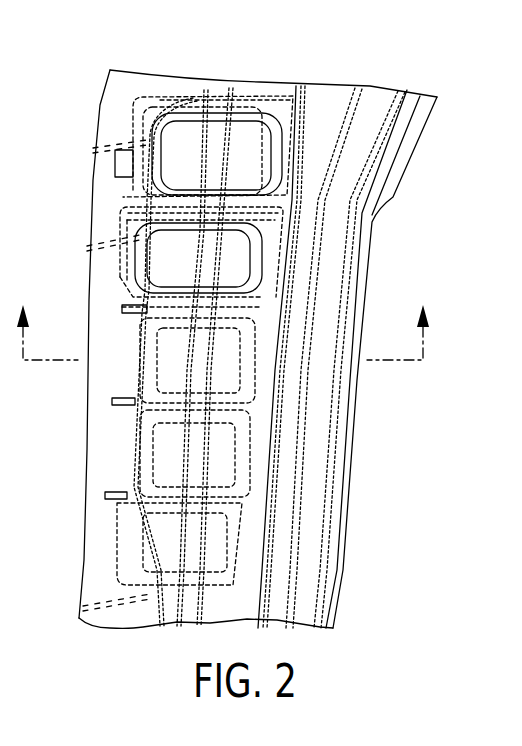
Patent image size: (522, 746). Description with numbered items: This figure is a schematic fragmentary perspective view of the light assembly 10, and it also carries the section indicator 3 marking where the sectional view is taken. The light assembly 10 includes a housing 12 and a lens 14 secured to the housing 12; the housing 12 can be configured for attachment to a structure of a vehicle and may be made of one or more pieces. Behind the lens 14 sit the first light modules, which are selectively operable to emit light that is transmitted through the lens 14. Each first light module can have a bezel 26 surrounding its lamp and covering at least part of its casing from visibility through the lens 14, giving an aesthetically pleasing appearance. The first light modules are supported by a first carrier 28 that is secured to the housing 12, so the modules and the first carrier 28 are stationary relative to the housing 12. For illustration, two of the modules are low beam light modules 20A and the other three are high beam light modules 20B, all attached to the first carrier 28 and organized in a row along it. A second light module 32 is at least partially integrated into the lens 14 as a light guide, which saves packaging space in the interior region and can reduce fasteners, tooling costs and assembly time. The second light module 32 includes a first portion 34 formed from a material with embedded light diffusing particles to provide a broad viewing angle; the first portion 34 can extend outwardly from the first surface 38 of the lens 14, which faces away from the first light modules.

The light assembly 10 is at (84, 80).
The housing 12 is at (423, 127).
The lens 14 is at (88, 440).
The low beam light modules 20A is at (240, 137).
The high beam light modules 20B is at (213, 447).
The bezel 26 is at (157, 103).
The first carrier 28 is at (297, 100).
The second light module 32 is at (342, 102).
The first portion 34 is at (342, 102).
The first surface 38 is at (100, 392).
The section line 3- 3 is at (223, 314).